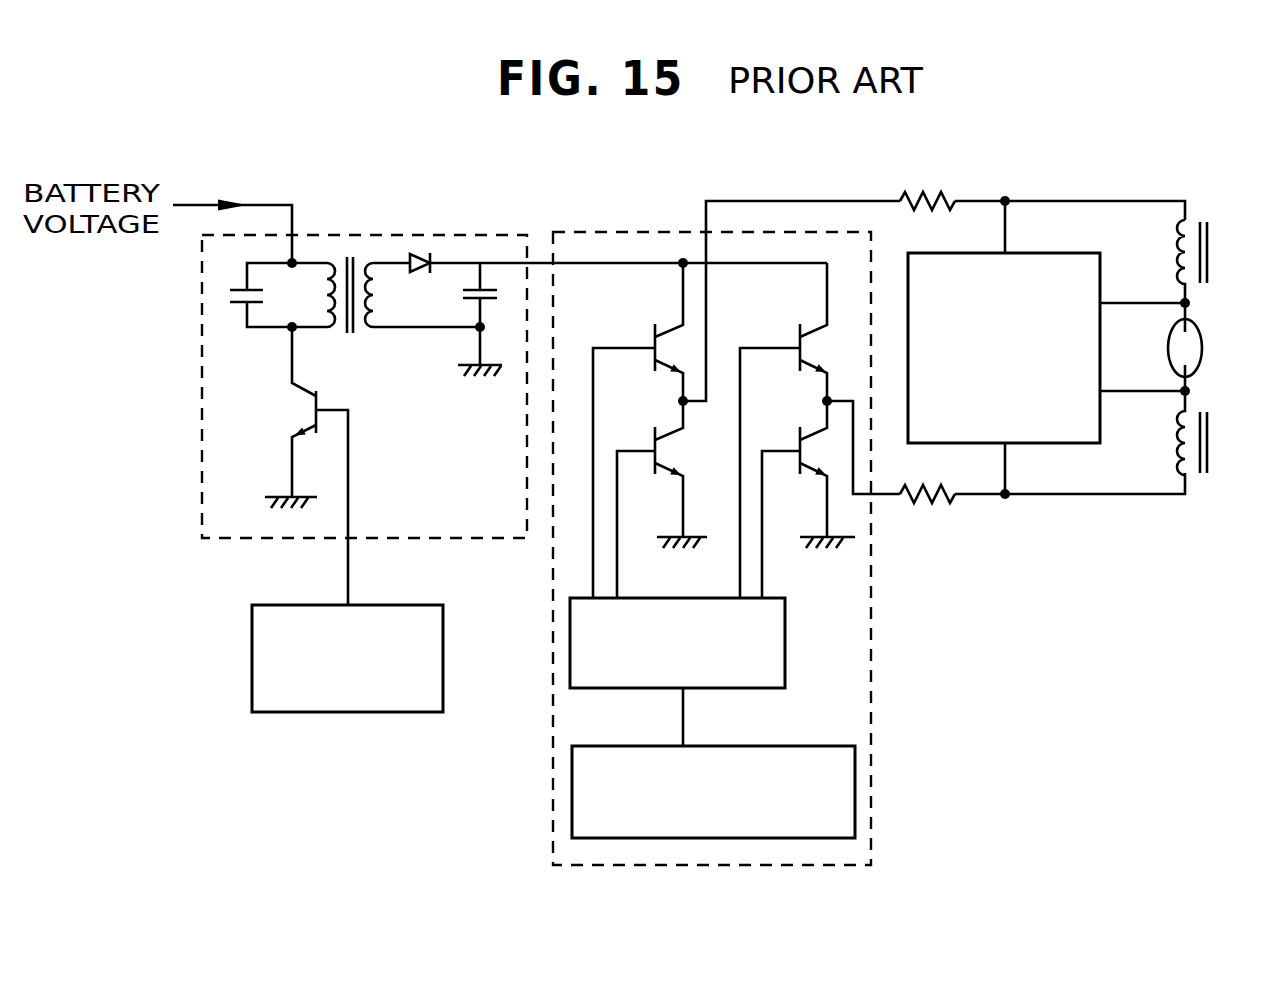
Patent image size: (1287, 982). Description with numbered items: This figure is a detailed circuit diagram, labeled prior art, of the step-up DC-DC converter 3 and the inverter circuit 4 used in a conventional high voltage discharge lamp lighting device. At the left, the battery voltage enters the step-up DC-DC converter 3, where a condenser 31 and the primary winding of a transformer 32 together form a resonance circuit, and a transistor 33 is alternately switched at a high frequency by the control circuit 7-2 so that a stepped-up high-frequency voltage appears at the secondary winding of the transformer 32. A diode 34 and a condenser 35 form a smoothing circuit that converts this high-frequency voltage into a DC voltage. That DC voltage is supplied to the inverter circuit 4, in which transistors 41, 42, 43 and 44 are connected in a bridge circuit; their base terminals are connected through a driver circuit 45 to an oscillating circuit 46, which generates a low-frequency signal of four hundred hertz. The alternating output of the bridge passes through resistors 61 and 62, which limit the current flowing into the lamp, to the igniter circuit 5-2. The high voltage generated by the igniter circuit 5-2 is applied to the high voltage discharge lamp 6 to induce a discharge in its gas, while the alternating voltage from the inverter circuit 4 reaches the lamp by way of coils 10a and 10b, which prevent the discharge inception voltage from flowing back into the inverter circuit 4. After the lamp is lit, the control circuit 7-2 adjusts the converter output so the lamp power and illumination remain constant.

The step-up DC-DC converter 3 is at (360, 235).
The inverter circuit 4 is at (655, 232).
The condenser 31 is at (236, 308).
The transformer 32 is at (349, 331).
The transistor 33 is at (298, 398).
The diode 34 is at (413, 272).
The condenser 35 is at (492, 302).
The control circuit 7-2 is at (348, 712).
The transistor 41 is at (669, 328).
The transistor 42 is at (667, 475).
The transistor 43 is at (814, 328).
The transistor 44 is at (807, 475).
The driver circuit 45 is at (785, 636).
The oscillating circuit 46 is at (816, 746).
The resistor 61 is at (928, 192).
The resistor 62 is at (932, 505).
The igniter circuit 5-2 is at (1100, 272).
The high voltage discharge lamp 6 is at (1202, 343).
The coil 10a is at (1209, 248).
The coil 10b is at (1209, 440).